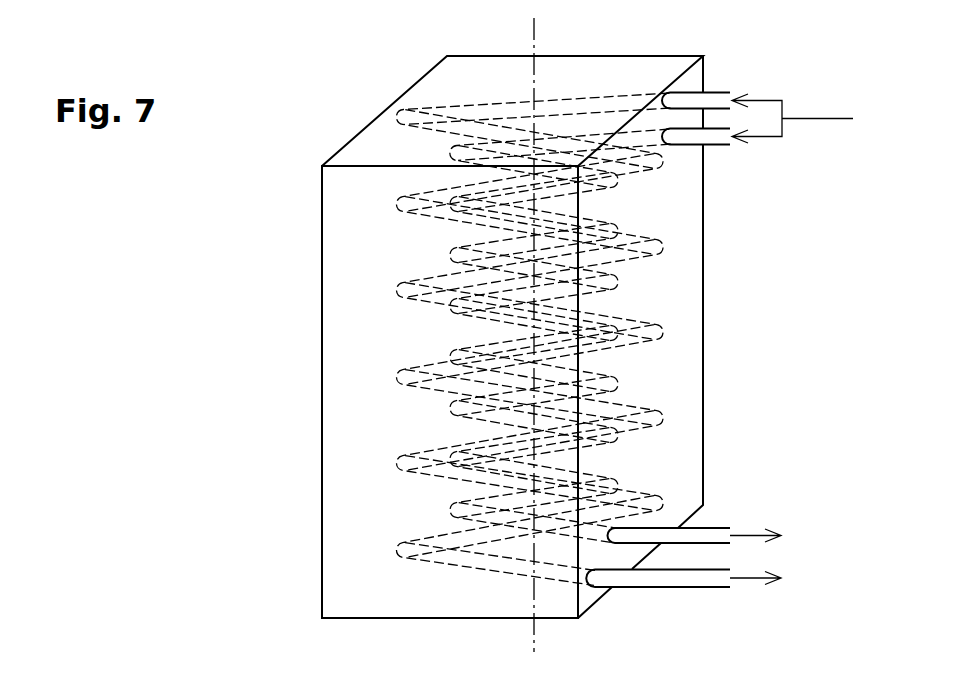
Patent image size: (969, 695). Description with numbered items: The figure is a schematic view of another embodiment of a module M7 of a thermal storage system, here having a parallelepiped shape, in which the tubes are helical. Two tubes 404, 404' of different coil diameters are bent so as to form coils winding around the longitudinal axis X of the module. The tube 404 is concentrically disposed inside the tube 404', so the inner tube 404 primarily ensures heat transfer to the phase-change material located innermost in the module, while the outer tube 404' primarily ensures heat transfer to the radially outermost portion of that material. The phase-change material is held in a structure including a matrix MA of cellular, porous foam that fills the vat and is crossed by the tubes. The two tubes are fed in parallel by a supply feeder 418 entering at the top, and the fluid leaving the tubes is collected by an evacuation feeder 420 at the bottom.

The module M7 is at (343, 110).
The matrix MA is at (352, 348).
The longitudinal axis X is at (534, 633).
The outer tube 404' is at (523, 297).
The inner tube 404 is at (614, 336).
The supply feeder 418 is at (765, 85).
The evacuation feeder 420 is at (718, 597).